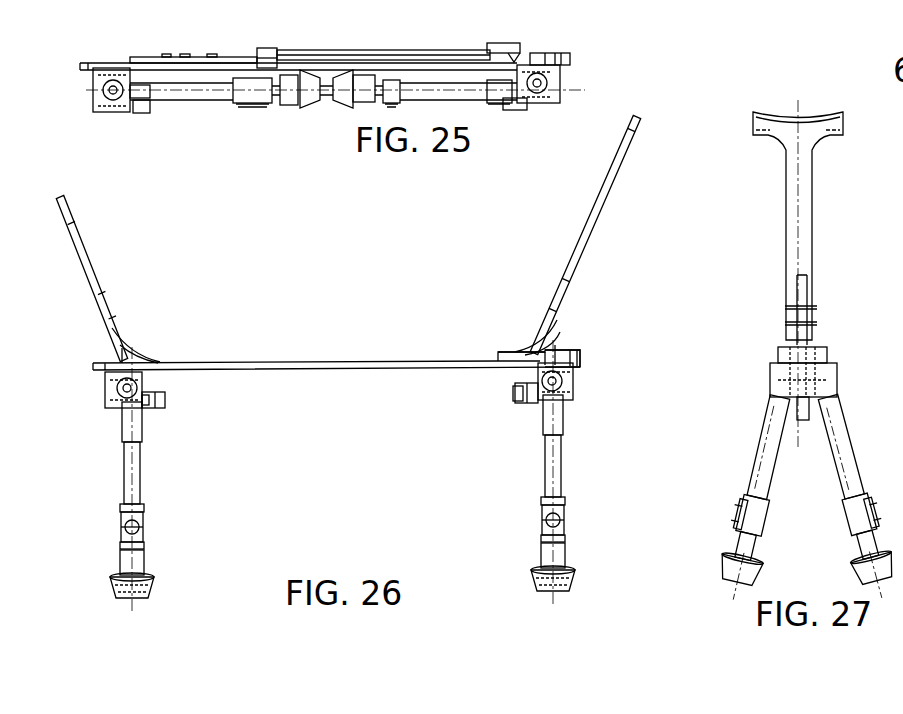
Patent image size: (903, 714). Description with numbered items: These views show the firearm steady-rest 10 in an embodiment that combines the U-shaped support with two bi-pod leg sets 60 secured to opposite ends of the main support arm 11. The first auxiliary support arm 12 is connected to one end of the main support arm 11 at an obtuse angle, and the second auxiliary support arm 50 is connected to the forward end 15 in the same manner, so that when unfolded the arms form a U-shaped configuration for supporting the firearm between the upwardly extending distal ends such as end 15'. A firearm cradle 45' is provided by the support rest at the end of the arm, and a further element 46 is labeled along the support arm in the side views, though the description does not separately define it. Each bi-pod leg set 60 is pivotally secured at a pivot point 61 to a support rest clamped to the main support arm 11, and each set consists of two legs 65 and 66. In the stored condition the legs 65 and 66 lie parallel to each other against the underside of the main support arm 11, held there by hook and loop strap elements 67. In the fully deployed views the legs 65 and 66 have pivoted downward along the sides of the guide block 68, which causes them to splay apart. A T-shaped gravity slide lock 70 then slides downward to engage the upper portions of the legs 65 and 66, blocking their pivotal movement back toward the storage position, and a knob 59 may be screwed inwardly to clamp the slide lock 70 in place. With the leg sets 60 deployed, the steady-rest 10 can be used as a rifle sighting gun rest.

In FIG. 25, the firearm steady-rest 10 is at (594, 41).
In FIG. 26, the firearm steady-rest 10 is at (262, 328).
In FIG. 26, the main support arm 11 is at (387, 360).
In FIG. 26, the first auxiliary support arm 12 is at (95, 260).
In FIG. 26, the forward distal end of main support arm 15 is at (496, 326).
In FIG. 26, the upwardly extending distal end 15' is at (522, 303).
In FIG. 27, the upwardly extending distal end 15' is at (758, 284).
In FIG. 25, the firearm cradle 45' is at (249, 34).
In FIG. 26, the firearm cradle 45' is at (567, 234).
In FIG. 27, the firearm cradle 45' is at (795, 190).
In FIG. 25, the top bar 46 is at (345, 52).
In FIG. 26, the top bar 46 is at (65, 200).
In FIG. 25, the second auxiliary support arm 50 is at (470, 41).
In FIG. 26, the second auxiliary support arm 50 is at (593, 208).
In FIG. 27, the second auxiliary support arm 50 is at (787, 190).
In FIG. 26, the knob 59 is at (513, 395).
In FIG. 25, the bi-pod leg set 60 is at (178, 102).
In FIG. 26, the bi-pod leg set 60 is at (142, 495).
In FIG. 27, the bi-pod leg set 60 is at (855, 543).
In FIG. 25, the pivot point 61 is at (560, 80).
In FIG. 26, the pivot point 61 is at (143, 387).
In FIG. 26, the leg 65 is at (142, 463).
In FIG. 27, the leg 65 is at (753, 463).
In FIG. 27, the leg 66 is at (845, 487).
In FIG. 25, the hook and loop strap elements 67 is at (267, 107).
In FIG. 26, the guide block 68 is at (562, 368).
In FIG. 26, the gravity slide lock 70 is at (148, 420).
In FIG. 27, the gravity slide lock 70 is at (807, 423).